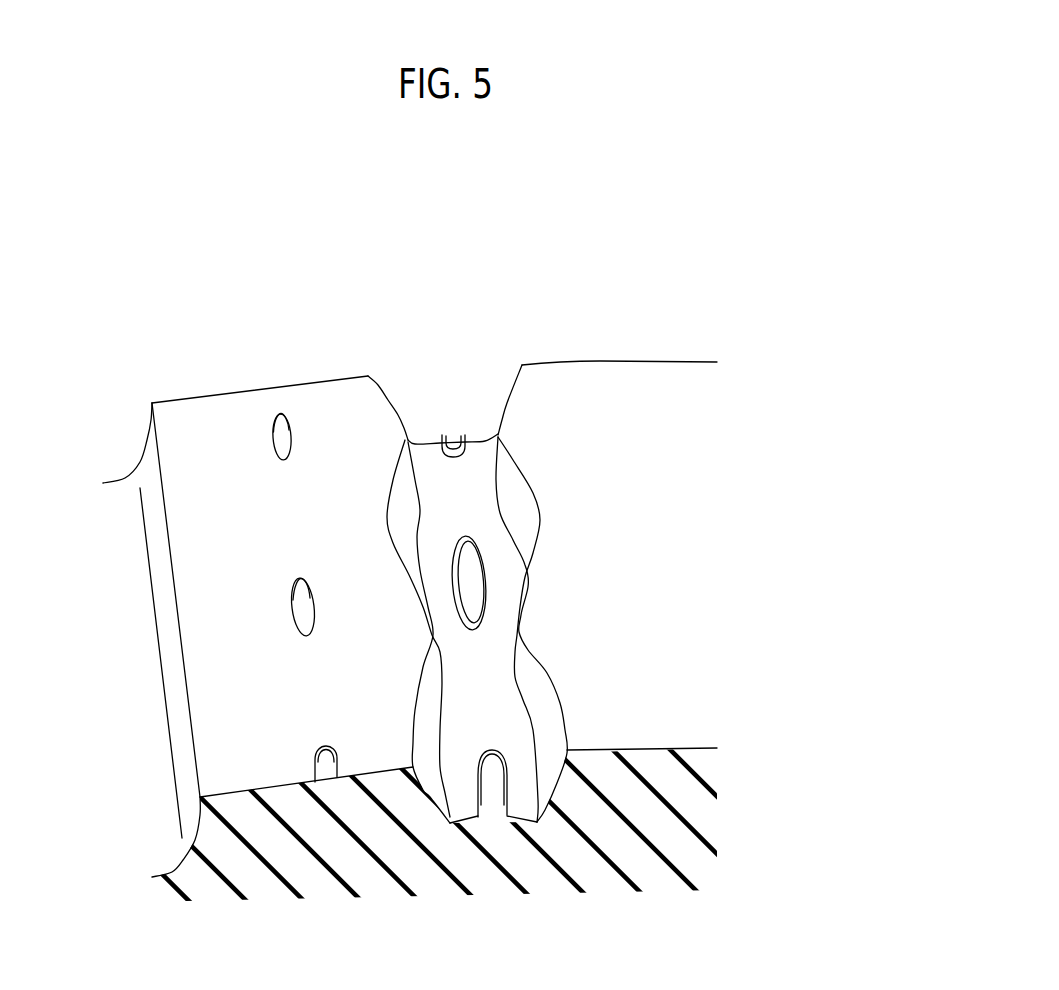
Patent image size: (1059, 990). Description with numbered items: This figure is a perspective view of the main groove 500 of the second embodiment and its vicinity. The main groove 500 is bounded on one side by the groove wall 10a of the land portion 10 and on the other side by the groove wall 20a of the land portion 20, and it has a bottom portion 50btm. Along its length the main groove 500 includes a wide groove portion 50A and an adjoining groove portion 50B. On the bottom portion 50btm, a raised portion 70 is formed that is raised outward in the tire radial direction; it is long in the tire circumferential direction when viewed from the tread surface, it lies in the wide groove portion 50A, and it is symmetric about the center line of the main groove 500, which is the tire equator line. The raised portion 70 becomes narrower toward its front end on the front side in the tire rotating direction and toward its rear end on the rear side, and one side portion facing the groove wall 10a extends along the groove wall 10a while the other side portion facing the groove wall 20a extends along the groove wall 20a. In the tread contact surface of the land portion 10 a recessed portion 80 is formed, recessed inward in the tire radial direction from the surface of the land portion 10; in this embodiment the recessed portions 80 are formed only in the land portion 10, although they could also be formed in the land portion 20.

The land portion 10 is at (280, 402).
The land portion 20 is at (652, 377).
The groove wall 10a is at (400, 511).
The groove wall 20a is at (520, 500).
The main groove 500 is at (430, 615).
The wide groove portion 50A is at (353, 525).
The groove portion 50B is at (407, 623).
The bottom portion 50btm is at (463, 812).
The raised portion 70 is at (467, 581).
The recessed portion 80 is at (305, 605).